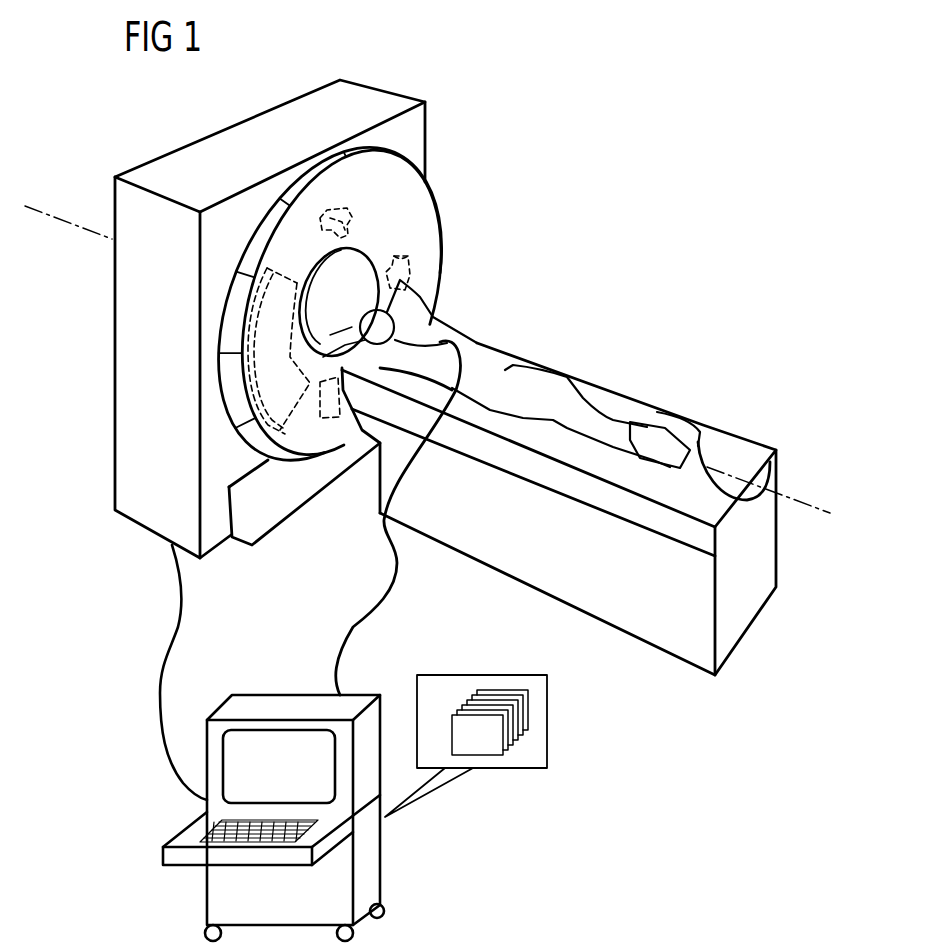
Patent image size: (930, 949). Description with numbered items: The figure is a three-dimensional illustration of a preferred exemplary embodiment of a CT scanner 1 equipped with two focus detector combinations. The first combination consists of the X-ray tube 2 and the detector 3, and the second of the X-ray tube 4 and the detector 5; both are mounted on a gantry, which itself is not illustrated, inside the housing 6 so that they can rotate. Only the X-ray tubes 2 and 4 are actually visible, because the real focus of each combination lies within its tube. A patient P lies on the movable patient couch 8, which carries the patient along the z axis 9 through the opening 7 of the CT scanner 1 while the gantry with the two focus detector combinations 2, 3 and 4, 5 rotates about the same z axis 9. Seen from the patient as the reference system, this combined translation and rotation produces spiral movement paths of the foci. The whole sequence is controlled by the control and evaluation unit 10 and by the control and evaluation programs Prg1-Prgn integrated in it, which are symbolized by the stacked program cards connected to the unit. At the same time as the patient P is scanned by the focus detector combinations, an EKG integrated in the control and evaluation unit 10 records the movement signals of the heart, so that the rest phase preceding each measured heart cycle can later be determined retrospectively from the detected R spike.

The CT scanner 1 is at (652, 186).
The X-ray tube 2 is at (357, 217).
The detector 3 is at (257, 428).
The X-ray tube 4 is at (410, 272).
The detector 5 is at (341, 382).
The housing 6 is at (123, 472).
The opening 7 is at (348, 293).
The movable patient couch 8 is at (560, 582).
The z axis 9 is at (797, 498).
The control and evaluation unit 10 is at (370, 870).
The patient P is at (462, 340).
The control and evaluation programs Prg1-Prgn is at (488, 756).